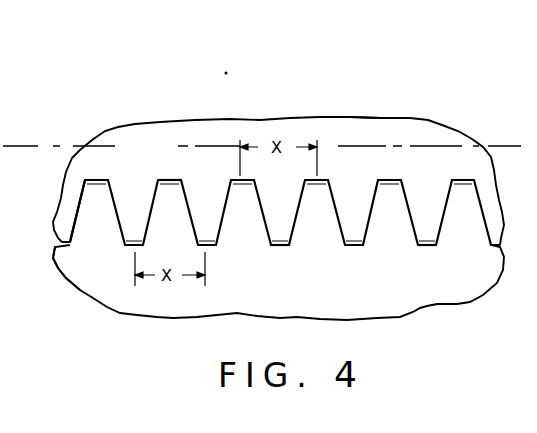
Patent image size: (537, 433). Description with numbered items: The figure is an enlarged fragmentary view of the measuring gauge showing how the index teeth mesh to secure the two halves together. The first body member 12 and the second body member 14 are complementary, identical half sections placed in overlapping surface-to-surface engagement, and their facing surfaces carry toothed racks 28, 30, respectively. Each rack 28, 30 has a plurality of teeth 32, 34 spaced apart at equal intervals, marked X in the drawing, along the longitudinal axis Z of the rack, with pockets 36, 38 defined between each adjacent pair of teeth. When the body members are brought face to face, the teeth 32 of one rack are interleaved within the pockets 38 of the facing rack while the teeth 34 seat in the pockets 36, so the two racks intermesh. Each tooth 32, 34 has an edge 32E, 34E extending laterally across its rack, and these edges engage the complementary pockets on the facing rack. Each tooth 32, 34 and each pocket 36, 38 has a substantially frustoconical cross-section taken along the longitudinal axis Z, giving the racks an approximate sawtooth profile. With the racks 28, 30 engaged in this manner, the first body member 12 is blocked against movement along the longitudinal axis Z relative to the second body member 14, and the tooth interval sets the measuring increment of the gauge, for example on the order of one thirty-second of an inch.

The first body member 12 is at (395, 133).
The second body member 14 is at (424, 299).
The toothed rack 28 is at (86, 262).
The toothed rack 30 is at (364, 116).
The teeth 32 is at (100, 212).
The edge 32E is at (102, 180).
The teeth 34 is at (205, 212).
The edge 34E is at (432, 250).
The pockets 36 is at (281, 250).
The pockets 38 is at (170, 180).
The longitudinal axis Z is at (490, 147).